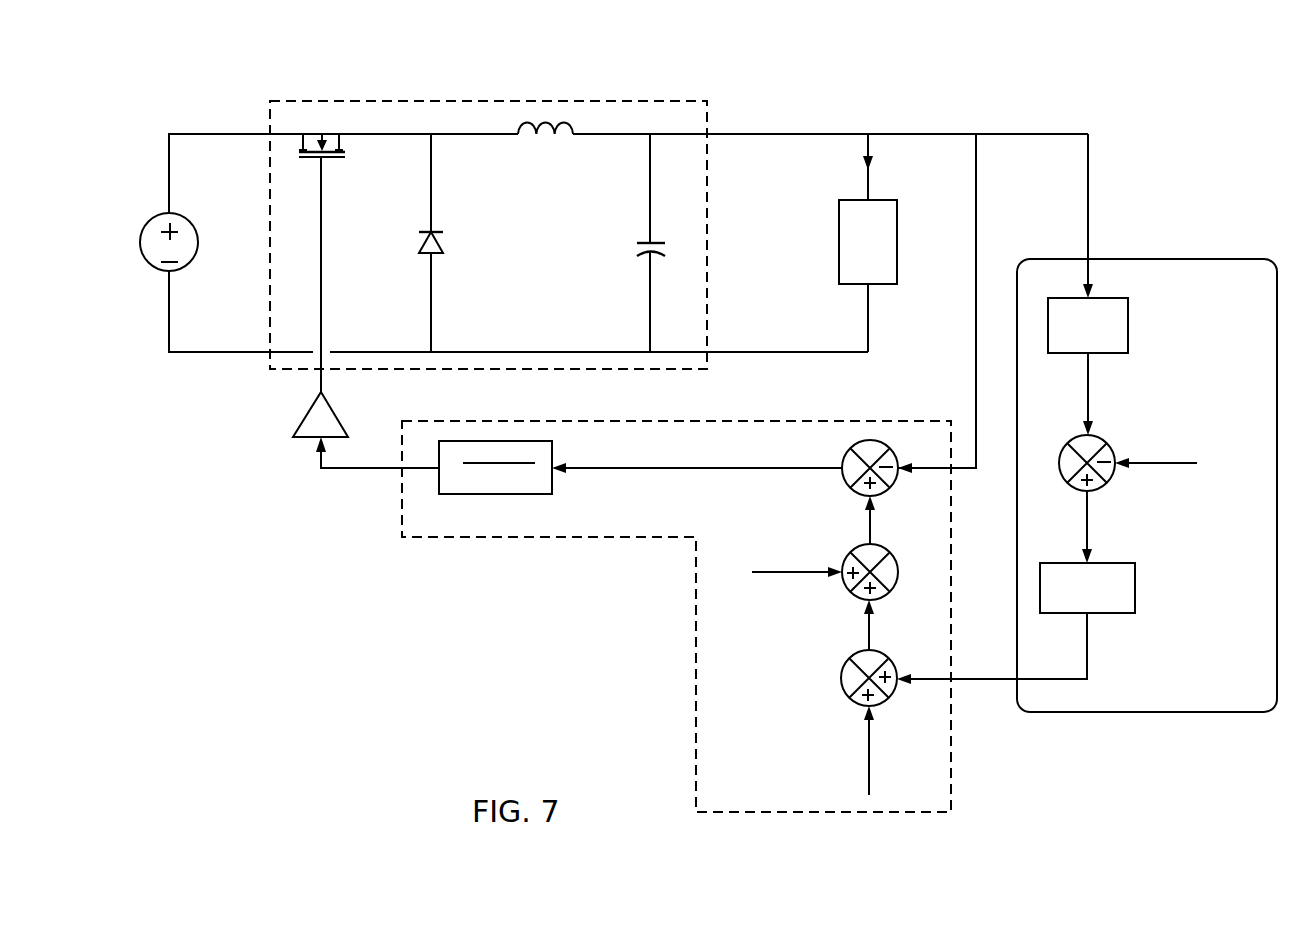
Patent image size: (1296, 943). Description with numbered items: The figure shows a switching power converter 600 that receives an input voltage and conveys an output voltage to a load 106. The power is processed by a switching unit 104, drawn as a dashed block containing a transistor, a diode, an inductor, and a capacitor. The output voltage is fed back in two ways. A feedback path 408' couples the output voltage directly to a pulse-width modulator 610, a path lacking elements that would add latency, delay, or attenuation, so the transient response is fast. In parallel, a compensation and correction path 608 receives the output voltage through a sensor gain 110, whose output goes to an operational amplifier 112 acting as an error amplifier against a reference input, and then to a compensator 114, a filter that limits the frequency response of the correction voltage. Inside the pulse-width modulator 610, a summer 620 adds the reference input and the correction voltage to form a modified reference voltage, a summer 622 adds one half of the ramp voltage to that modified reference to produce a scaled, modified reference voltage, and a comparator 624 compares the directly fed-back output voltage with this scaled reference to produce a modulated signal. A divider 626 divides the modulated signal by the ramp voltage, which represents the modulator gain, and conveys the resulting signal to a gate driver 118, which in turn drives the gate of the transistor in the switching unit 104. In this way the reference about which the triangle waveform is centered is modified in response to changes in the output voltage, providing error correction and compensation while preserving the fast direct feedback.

The switching power converter 600 is at (1178, 77).
The switching unit 104 is at (678, 101).
The load 106 is at (882, 200).
The sensor gain 110 is at (1110, 298).
The operational amplifier 112 is at (1098, 436).
The compensator 114 is at (1107, 613).
The gate driver 118 is at (337, 415).
The feedback path 408' is at (953, 336).
The compensation and correction path 608 is at (1156, 763).
The pulse-width modulator 610 is at (695, 706).
The summer 620 is at (847, 697).
The summer 622 is at (847, 597).
The comparator 624 is at (843, 486).
The divider 626 is at (485, 494).